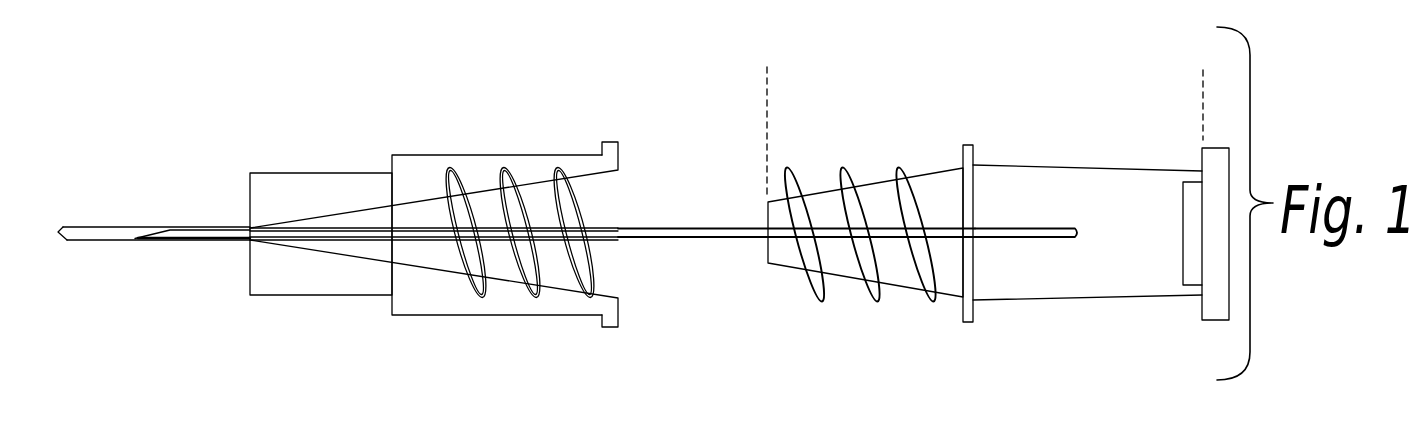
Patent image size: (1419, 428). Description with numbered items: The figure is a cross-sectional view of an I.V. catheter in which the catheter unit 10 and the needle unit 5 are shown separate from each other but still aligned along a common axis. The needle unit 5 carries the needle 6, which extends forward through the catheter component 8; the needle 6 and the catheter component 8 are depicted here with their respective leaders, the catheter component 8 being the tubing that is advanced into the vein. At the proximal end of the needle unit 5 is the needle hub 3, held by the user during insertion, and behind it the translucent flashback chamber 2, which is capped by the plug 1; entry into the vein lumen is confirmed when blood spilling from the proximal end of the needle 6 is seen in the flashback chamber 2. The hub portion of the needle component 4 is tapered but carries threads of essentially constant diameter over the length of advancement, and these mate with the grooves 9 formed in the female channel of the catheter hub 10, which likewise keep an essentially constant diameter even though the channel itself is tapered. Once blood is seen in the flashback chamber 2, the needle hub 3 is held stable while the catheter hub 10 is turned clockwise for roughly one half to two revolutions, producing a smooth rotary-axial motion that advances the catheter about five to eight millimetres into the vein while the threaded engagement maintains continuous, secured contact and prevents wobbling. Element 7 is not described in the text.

The plug 1 is at (1212, 158).
The flashback chamber 2 is at (1150, 275).
The needle hub 3 is at (970, 140).
The hub portion of the needle component 4 is at (960, 140).
The needle unit 5 is at (1203, 67).
The needle 6 is at (1057, 237).
The stylet wire 7 is at (170, 233).
The catheter component 8 is at (93, 228).
The grooves 9 is at (523, 268).
The catheter hub 10 is at (598, 142).